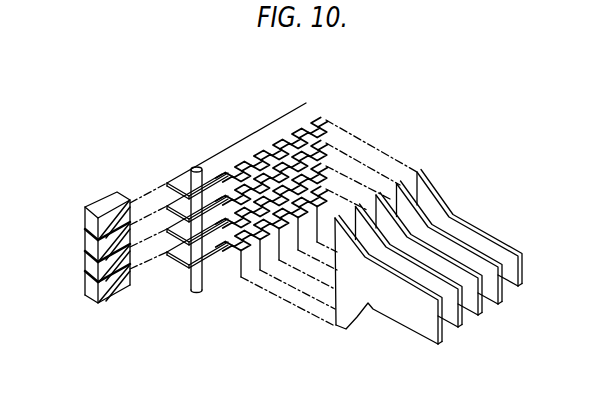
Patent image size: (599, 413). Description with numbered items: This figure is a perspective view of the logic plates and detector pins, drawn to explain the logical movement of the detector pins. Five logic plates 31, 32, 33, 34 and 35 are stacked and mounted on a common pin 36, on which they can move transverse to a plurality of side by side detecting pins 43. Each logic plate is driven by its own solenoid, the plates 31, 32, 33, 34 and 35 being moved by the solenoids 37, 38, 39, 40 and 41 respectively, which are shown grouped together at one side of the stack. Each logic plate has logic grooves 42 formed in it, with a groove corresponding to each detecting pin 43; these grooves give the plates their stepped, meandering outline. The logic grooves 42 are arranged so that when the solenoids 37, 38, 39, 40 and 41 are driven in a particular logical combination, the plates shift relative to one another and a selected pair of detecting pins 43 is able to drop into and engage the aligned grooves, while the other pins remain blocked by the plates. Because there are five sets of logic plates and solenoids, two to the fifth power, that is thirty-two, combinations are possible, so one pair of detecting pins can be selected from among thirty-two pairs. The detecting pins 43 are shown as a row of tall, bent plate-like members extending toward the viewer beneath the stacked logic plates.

The logic plate 31 is at (287, 114).
The logic plate 32 is at (323, 127).
The logic plate 33 is at (300, 178).
The logic plate 34 is at (300, 196).
The logic plate 35 is at (400, 165).
The pin 36 is at (196, 167).
The solenoid 37 is at (92, 222).
The solenoid 38 is at (92, 243).
The solenoid 39 is at (92, 265).
The solenoid 40 is at (92, 285).
The solenoid 41 is at (98, 303).
The logic groove 42 is at (247, 156).
The detecting pin 43 is at (415, 320).